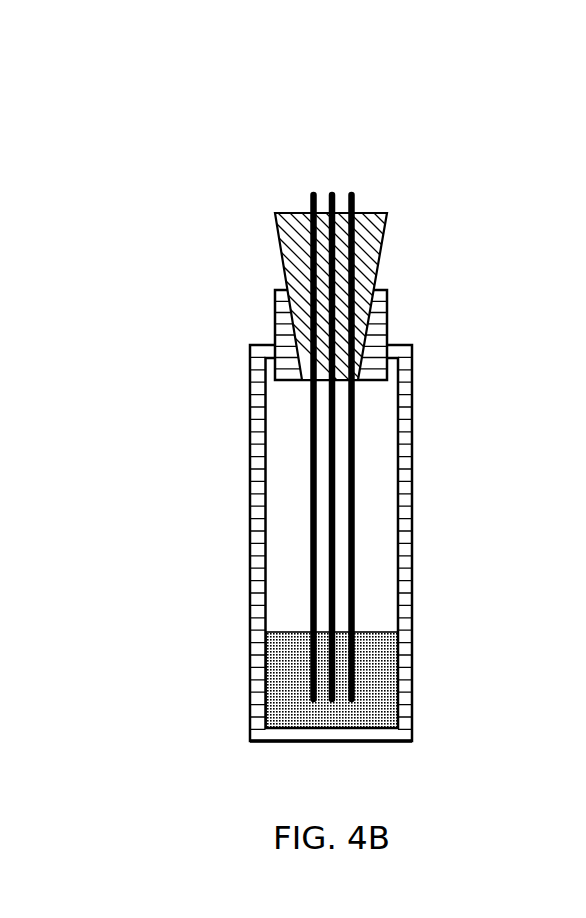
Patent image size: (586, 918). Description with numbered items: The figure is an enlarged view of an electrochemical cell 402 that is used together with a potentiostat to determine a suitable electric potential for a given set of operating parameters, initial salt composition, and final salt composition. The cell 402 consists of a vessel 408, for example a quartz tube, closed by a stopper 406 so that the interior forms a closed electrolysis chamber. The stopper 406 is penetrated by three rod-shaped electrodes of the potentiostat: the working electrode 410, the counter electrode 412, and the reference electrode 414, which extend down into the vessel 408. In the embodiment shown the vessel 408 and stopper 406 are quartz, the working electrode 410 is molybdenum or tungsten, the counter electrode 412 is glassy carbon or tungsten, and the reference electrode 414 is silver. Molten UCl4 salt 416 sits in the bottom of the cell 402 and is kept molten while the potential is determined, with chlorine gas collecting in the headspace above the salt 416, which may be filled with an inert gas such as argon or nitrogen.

The cell 402 is at (375, 394).
The stopper 406 is at (292, 238).
The vessel 408 is at (404, 460).
The working electrode 410 is at (353, 194).
The counter electrode 412 is at (316, 190).
The reference electrode 414 is at (335, 192).
The molten UCl4 salt 416 is at (385, 667).